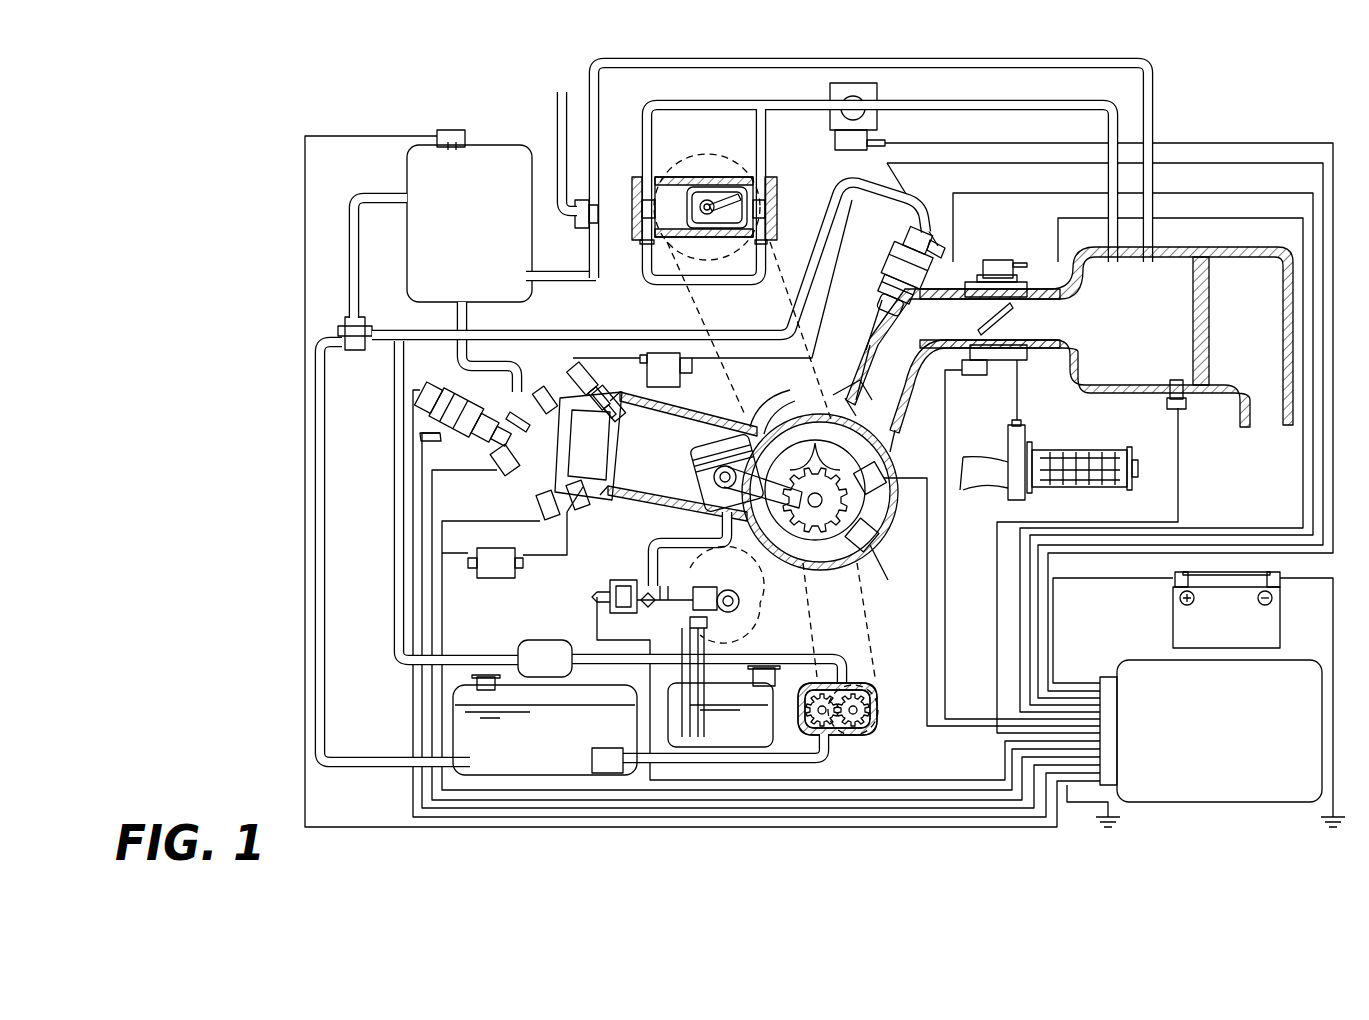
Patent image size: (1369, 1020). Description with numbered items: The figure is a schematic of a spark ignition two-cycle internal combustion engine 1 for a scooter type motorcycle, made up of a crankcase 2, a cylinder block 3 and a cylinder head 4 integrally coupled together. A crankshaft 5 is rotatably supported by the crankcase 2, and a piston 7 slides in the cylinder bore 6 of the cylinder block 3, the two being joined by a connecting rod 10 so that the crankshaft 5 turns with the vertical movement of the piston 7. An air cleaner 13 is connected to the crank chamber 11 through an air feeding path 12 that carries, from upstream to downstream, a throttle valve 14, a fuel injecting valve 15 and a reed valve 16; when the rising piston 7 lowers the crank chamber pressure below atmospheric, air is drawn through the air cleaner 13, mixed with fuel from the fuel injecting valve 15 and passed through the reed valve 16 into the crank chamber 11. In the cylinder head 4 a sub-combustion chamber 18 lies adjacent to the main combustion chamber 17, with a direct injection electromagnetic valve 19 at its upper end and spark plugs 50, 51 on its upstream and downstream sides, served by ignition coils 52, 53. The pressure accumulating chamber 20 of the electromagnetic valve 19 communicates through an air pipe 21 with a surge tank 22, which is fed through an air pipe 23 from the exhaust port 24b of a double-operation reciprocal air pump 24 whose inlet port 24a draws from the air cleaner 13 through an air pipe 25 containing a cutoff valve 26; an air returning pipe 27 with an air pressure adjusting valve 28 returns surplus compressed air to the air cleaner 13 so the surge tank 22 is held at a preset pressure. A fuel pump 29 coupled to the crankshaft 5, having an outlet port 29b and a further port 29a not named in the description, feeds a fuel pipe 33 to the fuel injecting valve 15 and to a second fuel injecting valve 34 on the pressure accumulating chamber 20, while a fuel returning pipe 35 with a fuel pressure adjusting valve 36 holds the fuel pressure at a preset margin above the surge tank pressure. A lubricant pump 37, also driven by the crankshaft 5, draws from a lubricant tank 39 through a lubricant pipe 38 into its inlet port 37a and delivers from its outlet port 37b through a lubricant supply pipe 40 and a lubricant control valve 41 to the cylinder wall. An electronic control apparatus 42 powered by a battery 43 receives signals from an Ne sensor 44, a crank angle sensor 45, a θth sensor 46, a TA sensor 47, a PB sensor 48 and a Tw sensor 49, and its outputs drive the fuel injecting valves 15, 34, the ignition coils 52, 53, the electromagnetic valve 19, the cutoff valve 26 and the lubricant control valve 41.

The spark ignition two-cycle internal combustion engine 1 is at (683, 427).
The crankcase 2 is at (762, 415).
The cylinder block 3 is at (700, 410).
The cylinder head 4 is at (585, 372).
The crankshaft 5 is at (840, 440).
The cylinder bore 6 is at (690, 448).
The piston 7 is at (752, 468).
The connecting rod 10 is at (800, 506).
The crank chamber 11 is at (770, 412).
The air feeding path 12 is at (946, 321).
The air cleaner 13 is at (1106, 373).
The throttle valve 14 is at (998, 300).
The fuel injecting valve 15 is at (888, 270).
The reed valve 16 is at (862, 372).
The main combustion chamber 17 is at (540, 441).
The sub-combustion chamber 18 is at (572, 498).
The direct injection electromagnetic valve 19 is at (543, 392).
The pressure accumulating chamber 20 is at (512, 425).
The air pipe 21 is at (470, 323).
The surge tank 22 is at (469, 216).
The air pipe 23 is at (604, 274).
The double-operation reciprocal air pump 24 is at (707, 219).
The inlet port 24a is at (638, 177).
The exhaust port 24b is at (770, 236).
The air pipe 25 is at (708, 104).
The cutoff valve 26 is at (853, 96).
The air returning pipe 27 is at (682, 60).
The air pressure adjusting valve 28 is at (560, 175).
The fuel pump 29 is at (769, 673).
The pump gear 29a is at (838, 748).
The outlet port 29b is at (835, 680).
The fuel pipe 33 is at (397, 505).
The fuel injecting valve 34 is at (458, 397).
The fuel returning pipe 35 is at (325, 634).
The fuel pressure adjusting valve 36 is at (358, 300).
The lubricant pump 37 is at (710, 641).
The inlet port 37a is at (704, 660).
The outlet port 37b is at (664, 587).
The lubricant pipe 38 is at (682, 686).
The lubricant tank 39 is at (770, 672).
The lubricant supply pipe 40 is at (640, 580).
The lubricant control valve 41 is at (622, 580).
The electronic control apparatus 42 is at (1212, 797).
The battery 43 is at (1172, 613).
The Ne sensor 44 is at (897, 465).
The crank angle sensor 45 is at (872, 565).
The θth sensor 46 is at (1005, 260).
The TA sensor 47 is at (1184, 415).
The PB sensor 48 is at (972, 375).
The Tw sensor 49 is at (538, 503).
The spark plug 50 is at (580, 505).
The spark plug 51 is at (585, 390).
The ignition coil 52 is at (502, 580).
The ignition coil 53 is at (680, 352).